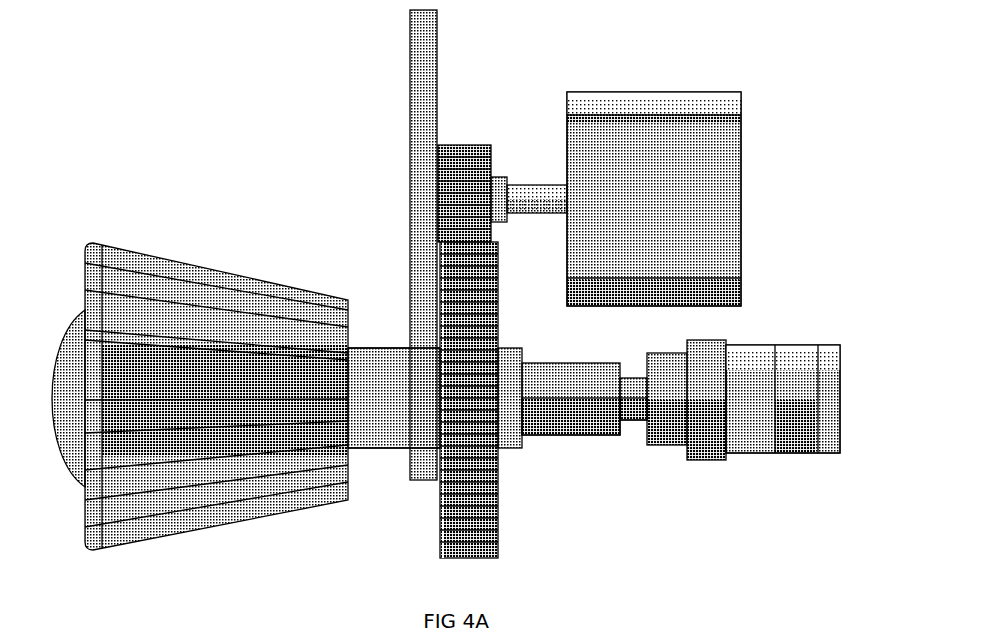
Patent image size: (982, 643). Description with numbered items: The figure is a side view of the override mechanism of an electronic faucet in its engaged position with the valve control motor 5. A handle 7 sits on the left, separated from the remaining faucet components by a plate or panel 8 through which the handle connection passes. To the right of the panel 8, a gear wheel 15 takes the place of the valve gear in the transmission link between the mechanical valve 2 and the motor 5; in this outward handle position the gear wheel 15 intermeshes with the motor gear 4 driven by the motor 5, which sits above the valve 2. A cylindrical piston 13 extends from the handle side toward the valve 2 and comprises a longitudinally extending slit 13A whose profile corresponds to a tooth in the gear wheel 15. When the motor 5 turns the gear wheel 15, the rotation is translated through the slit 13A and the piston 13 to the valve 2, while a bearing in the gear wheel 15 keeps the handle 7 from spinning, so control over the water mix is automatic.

The mechanical valve 2 is at (758, 397).
The motor gear 4 is at (493, 148).
The motor 5 is at (687, 184).
The handle 7 is at (252, 393).
The plate or panel 8 is at (418, 110).
The piston 13 is at (667, 452).
The longitudinally extending slit 13A is at (578, 371).
The gear wheel 15 is at (498, 547).